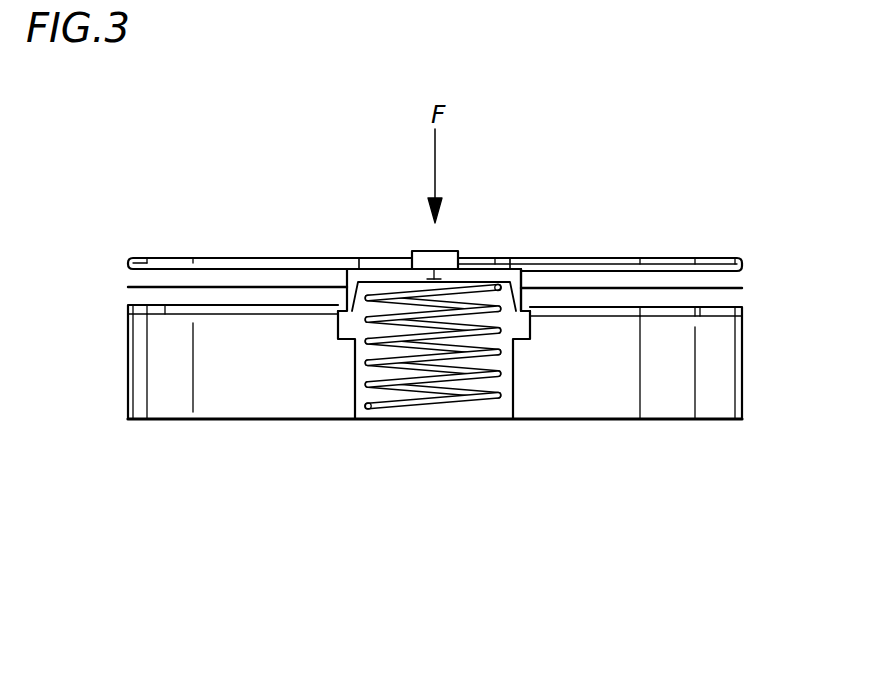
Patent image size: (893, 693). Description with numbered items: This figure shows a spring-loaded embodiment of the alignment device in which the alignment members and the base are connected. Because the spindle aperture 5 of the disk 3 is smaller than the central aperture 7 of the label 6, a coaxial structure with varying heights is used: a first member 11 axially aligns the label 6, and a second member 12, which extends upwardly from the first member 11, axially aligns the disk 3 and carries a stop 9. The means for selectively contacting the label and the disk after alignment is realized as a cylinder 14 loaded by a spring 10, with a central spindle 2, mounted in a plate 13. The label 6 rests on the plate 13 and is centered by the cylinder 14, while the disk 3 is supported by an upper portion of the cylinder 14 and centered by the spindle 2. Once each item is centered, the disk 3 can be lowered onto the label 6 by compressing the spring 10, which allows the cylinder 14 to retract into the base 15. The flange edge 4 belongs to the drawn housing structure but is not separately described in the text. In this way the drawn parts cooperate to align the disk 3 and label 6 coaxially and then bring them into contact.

The central spindle 2 is at (447, 250).
The disk 3 is at (158, 258).
The flange edge 4 is at (531, 270).
The spindle aperture 5 is at (410, 256).
The label 6 is at (130, 289).
The central aperture 7 is at (347, 271).
The stop 9 is at (359, 262).
The spring 10 is at (428, 414).
The first member 11 is at (340, 309).
The second member 12 is at (415, 252).
The plate 13 is at (165, 311).
The cylinder 14 is at (510, 260).
The base 15 is at (250, 389).